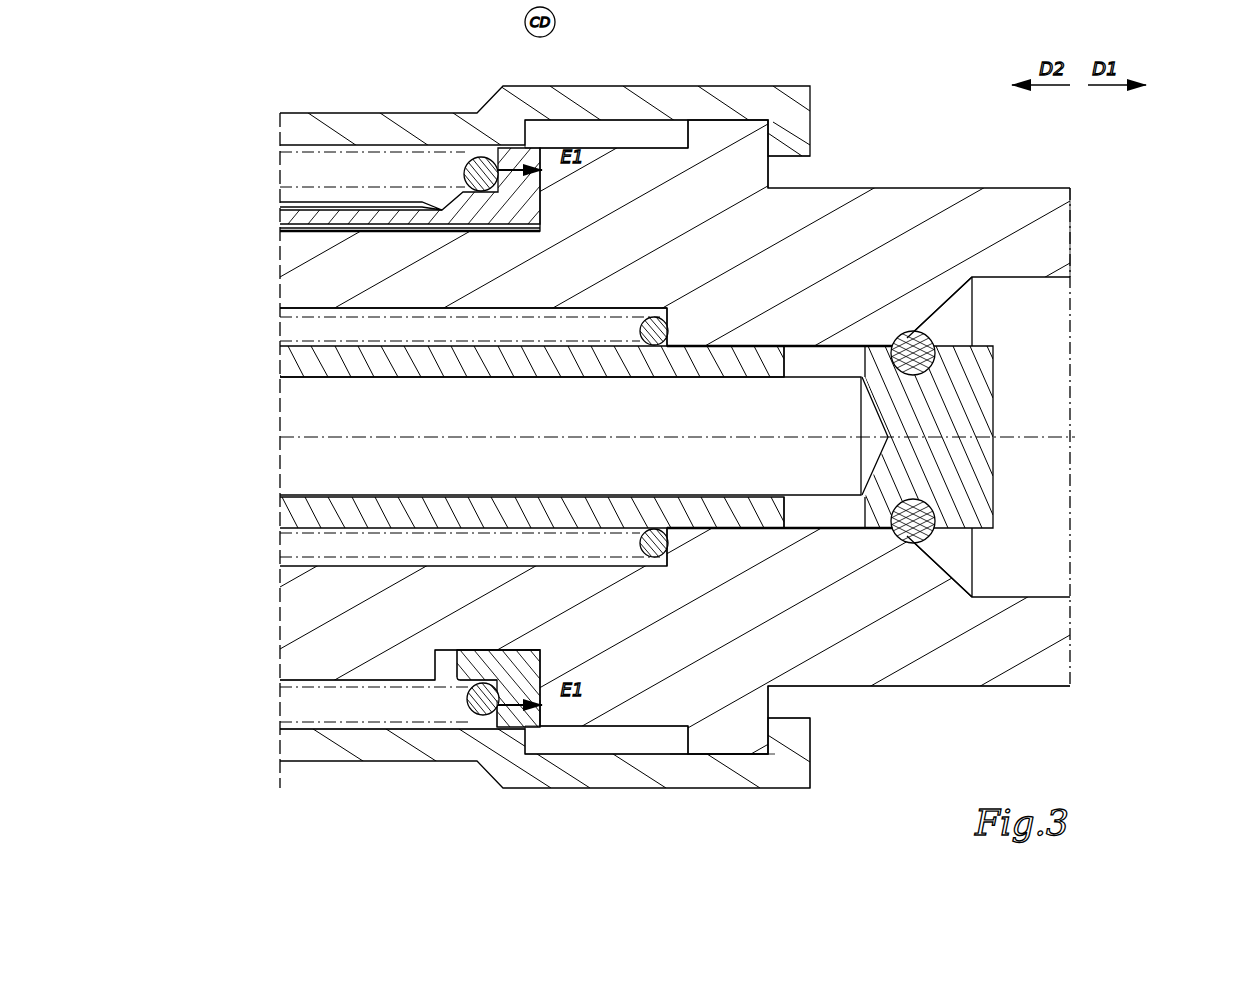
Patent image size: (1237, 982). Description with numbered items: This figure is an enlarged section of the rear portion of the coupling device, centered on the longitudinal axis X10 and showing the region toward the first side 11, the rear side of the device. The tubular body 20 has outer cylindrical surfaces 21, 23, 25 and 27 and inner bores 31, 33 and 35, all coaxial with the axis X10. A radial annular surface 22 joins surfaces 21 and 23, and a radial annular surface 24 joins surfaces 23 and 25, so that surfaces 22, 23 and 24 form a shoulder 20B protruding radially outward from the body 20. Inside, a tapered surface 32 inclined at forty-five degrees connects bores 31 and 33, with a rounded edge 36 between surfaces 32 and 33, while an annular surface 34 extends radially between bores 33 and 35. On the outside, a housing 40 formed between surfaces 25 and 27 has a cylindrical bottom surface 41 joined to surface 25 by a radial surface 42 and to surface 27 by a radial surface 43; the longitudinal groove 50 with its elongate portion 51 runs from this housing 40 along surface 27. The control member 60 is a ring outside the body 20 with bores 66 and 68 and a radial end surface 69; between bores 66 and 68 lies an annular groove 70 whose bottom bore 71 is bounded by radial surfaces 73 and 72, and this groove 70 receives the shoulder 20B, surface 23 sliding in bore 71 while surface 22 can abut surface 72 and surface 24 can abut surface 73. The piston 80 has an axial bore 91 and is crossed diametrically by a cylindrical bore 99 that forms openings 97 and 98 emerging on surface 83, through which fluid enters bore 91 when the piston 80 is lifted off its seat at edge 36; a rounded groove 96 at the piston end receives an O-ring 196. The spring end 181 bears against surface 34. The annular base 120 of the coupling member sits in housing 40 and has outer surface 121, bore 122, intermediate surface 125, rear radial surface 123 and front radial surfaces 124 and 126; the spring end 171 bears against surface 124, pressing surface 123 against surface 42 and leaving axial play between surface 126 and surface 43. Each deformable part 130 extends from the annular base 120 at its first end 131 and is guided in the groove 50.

The first side 11 is at (1133, 168).
The tubular body 20 is at (857, 235).
The shoulder 20B is at (775, 845).
The outer cylindrical surface 21 is at (985, 689).
The radial annular surface 22 is at (771, 760).
The outer cylindrical surface 23 is at (727, 756).
The radial annular surface 24 is at (688, 757).
The outer cylindrical surface 25 is at (625, 756).
The outer cylindrical surface 27 is at (306, 687).
The inner cylindrical bore 31 is at (1025, 285).
The tapered surface 32 is at (949, 308).
The inner cylindrical bore 33 is at (764, 351).
The annular surface 34 is at (664, 341).
The inner cylindrical bore 35 is at (378, 312).
The rounded edge 36 is at (917, 346).
The housing 40 is at (436, 455).
The cylindrical bottom surface 41 is at (470, 655).
The radial surface 42 is at (524, 666).
The radial surface 43 is at (440, 654).
The longitudinal groove 50 is at (283, 229).
The elongate portion 51 is at (386, 236).
The control member 60 is at (815, 779).
The bore 66 is at (368, 723).
The bore 68 is at (798, 716).
The radial end surface 69 is at (824, 746).
The annular groove 70 is at (618, 30).
The bore 71 is at (638, 126).
The radial surface 72 is at (761, 133).
The radial surface 73 is at (533, 135).
The piston 80 is at (303, 510).
The surface 83 is at (690, 343).
The axial bore 91 is at (647, 485).
The annular groove 96 is at (941, 504).
The cylindrical opening 97 is at (836, 342).
The cylindrical opening 98 is at (852, 531).
The cylindrical bore 99 is at (828, 380).
The annular base 120 is at (540, 845).
The cylindrical outer surface 121 is at (506, 732).
The bore 122 is at (533, 648).
The radial surface 123 is at (547, 721).
The radial surface 124 is at (486, 719).
The second cylindrical outer surface 125 is at (463, 689).
The radial surface 126 is at (445, 679).
The deformable part 130 is at (282, 205).
The first end 131 is at (439, 205).
The first end of spring 171 is at (475, 158).
The first end of spring 181 is at (644, 334).
The O-ring 196 is at (946, 536).
The longitudinal axis X10 is at (659, 436).